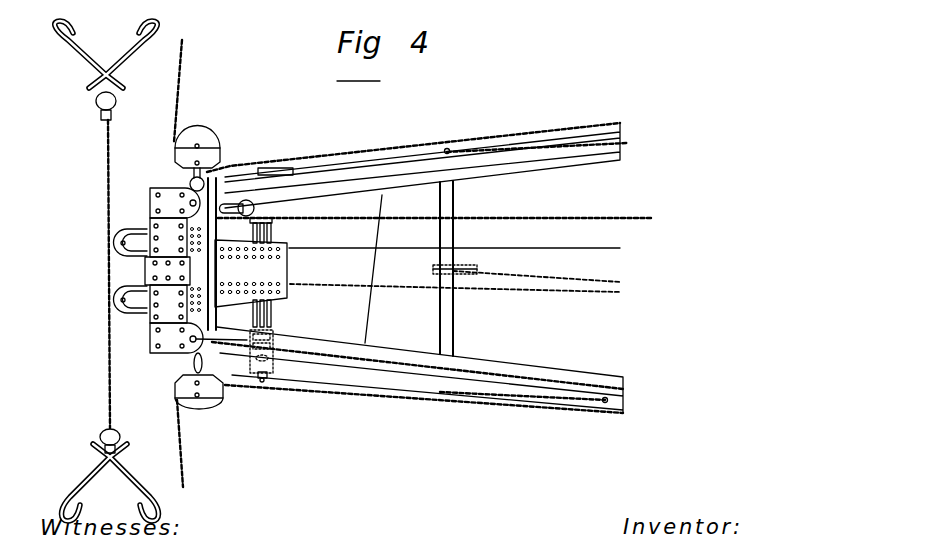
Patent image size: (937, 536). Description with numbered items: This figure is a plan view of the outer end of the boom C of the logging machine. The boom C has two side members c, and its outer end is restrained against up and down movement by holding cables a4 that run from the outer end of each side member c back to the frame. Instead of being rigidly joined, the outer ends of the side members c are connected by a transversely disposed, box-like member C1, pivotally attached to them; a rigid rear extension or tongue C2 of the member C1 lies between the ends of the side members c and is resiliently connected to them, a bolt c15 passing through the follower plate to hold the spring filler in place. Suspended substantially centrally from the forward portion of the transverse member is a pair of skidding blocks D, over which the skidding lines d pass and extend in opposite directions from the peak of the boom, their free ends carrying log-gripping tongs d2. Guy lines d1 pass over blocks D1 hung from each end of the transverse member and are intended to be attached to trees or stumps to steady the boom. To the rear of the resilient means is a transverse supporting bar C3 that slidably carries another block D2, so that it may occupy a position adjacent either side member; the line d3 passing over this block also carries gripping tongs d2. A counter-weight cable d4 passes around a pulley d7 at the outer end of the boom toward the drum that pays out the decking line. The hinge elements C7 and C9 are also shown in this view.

The tongs d2 is at (86, 82).
The skidding line d is at (105, 161).
The skidding block D is at (206, 140).
The guy line block D1 is at (183, 390).
The decking line block D2 is at (467, 262).
The transverse member C1 is at (150, 212).
The rear extension C2 is at (258, 275).
The supporting bar C3 is at (153, 330).
The hinge links C7 is at (253, 227).
The hinge bar C9 is at (272, 237).
The boom C is at (533, 168).
The side member c is at (417, 370).
The bolt c15 is at (277, 170).
The guy line d1 is at (358, 158).
The decking line d3 is at (600, 279).
The counter-weight cable d4 is at (578, 217).
The pulley d7 is at (237, 198).
The holding cable a4 is at (493, 160).